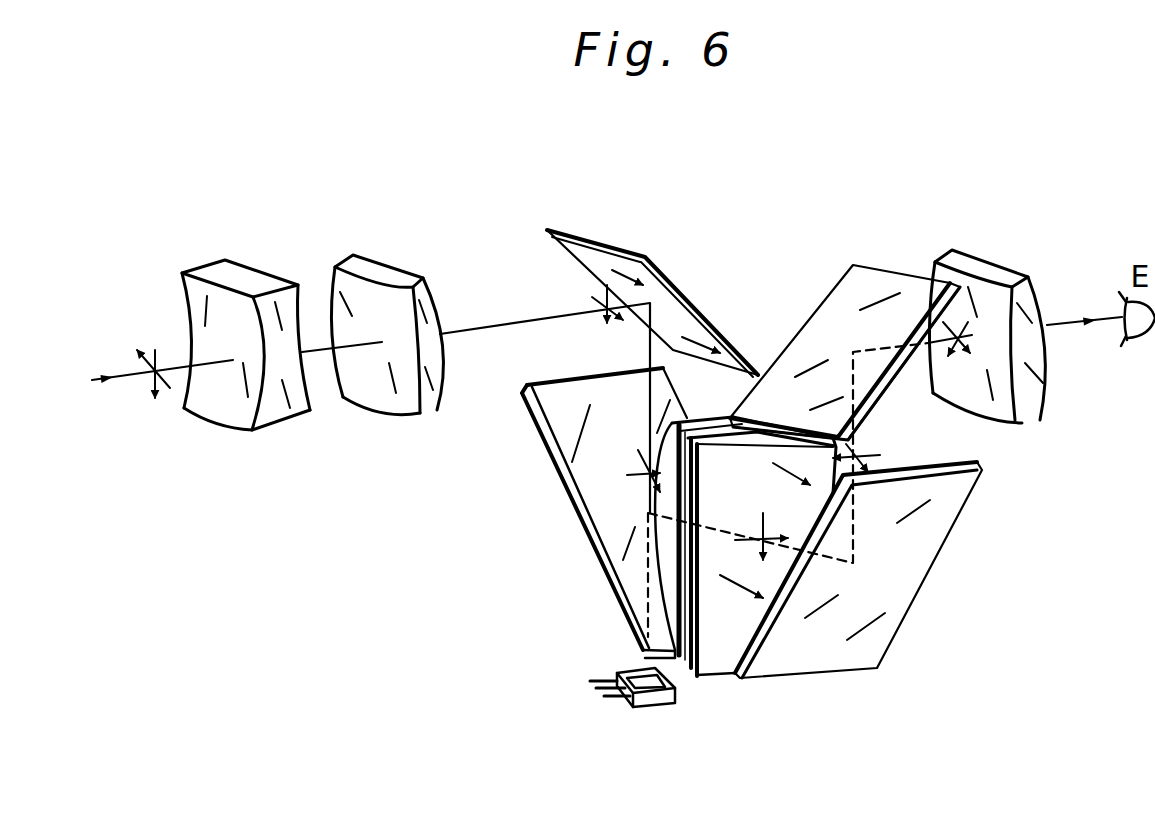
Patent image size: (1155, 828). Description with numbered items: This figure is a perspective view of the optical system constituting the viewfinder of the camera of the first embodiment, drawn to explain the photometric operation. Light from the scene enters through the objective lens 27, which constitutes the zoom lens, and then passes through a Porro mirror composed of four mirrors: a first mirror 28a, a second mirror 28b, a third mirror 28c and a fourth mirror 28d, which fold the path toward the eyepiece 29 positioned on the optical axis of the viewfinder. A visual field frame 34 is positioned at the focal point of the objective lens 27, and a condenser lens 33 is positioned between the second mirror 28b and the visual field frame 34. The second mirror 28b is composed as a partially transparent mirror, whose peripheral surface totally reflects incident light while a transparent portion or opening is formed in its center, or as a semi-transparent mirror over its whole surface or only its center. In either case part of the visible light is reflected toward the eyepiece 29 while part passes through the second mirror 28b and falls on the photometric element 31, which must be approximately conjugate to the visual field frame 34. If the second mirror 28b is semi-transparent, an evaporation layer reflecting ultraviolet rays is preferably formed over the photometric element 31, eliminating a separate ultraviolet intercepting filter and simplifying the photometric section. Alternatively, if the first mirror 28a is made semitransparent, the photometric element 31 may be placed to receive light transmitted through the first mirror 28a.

The objective lens 27 is at (377, 222).
The first mirror 28a is at (603, 238).
The second mirror 28b is at (588, 490).
The third mirror 28c is at (858, 652).
The fourth mirror 28d is at (878, 287).
The eyepiece 29 is at (978, 262).
The photometric element 31 is at (648, 702).
The condenser lens 33 is at (675, 660).
The visual field frame 34 is at (718, 657).